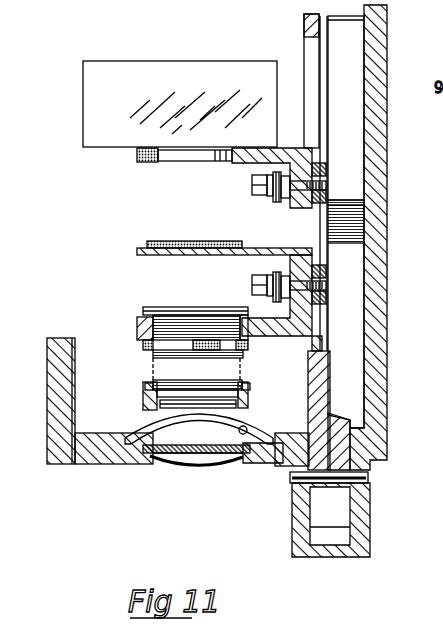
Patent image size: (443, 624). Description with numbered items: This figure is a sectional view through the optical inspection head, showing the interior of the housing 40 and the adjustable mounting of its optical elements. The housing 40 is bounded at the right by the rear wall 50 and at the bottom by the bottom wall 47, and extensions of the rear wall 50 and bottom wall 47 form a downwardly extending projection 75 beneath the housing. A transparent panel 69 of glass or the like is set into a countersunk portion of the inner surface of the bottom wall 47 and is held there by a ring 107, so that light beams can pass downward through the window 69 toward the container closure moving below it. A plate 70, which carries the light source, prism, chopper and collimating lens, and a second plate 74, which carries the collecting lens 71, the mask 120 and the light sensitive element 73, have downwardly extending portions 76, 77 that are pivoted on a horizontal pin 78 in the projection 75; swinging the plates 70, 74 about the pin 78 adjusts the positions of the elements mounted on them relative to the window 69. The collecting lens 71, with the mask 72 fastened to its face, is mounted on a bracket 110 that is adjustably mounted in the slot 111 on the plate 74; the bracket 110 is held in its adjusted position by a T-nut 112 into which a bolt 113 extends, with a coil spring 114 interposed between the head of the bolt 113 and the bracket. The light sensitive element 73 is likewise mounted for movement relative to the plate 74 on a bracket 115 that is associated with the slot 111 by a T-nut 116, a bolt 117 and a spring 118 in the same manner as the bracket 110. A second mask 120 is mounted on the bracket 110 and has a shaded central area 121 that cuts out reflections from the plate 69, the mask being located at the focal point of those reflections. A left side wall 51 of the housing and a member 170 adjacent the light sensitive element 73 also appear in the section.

The housing 40 is at (385, 193).
The bottom wall 47 is at (92, 456).
The rear wall 50 is at (374, 362).
The side wall 51 is at (60, 388).
The transparent panel 69 is at (207, 453).
The plate 70 is at (350, 419).
The collecting lens 71 is at (150, 371).
The mask 72 is at (197, 412).
The light sensitive element 73 is at (100, 122).
The second plate 74 is at (314, 371).
The projection 75 is at (357, 516).
The downwardly extending portion 76 is at (338, 460).
The downwardly extending portion 77 is at (315, 455).
The pin 78 is at (369, 477).
The ring 107 is at (135, 466).
The bracket 110 is at (279, 328).
The slot 111 is at (312, 53).
The T-nut 112 is at (323, 272).
The bolt 113 is at (254, 287).
The coil spring 114 is at (277, 271).
The bracket 115 is at (245, 153).
The T-nut 116 is at (322, 163).
The bolt 117 is at (254, 193).
The spring 118 is at (274, 203).
The second mask 120 is at (137, 251).
The shaded central area 121 is at (180, 250).
The connector bar 170 is at (168, 158).